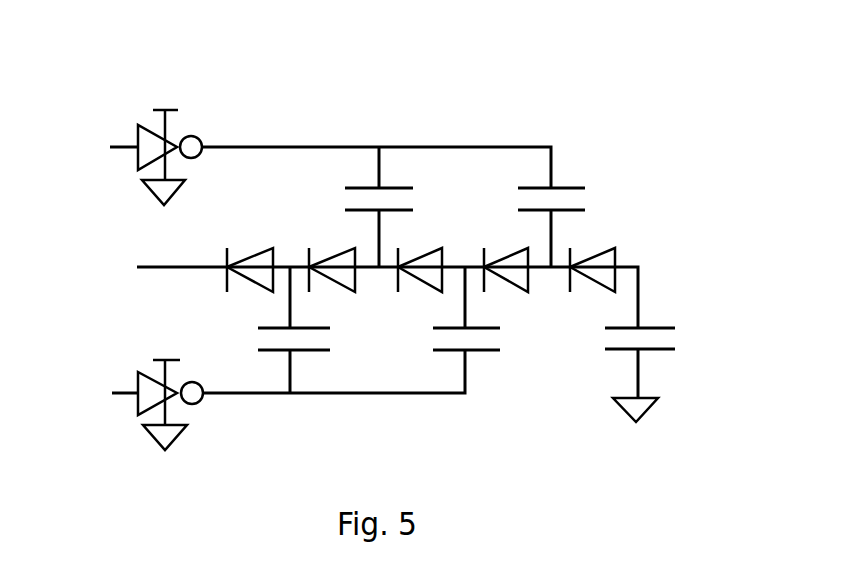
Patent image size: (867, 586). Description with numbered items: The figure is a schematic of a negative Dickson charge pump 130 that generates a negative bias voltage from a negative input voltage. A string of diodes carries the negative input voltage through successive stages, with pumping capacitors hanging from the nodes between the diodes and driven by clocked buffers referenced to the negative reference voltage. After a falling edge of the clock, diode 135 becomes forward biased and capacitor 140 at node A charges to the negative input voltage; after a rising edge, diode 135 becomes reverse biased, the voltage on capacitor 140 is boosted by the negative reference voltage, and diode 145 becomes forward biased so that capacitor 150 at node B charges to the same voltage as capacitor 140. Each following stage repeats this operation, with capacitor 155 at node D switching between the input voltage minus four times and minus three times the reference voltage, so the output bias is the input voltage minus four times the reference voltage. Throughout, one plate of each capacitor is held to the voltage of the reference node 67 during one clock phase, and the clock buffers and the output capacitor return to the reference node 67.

The negative Dickson charge pump 130 is at (355, 72).
The diode 135 is at (253, 243).
The diode 145 is at (330, 245).
The capacitor 140 is at (330, 337).
The capacitor 150 is at (418, 198).
The capacitor 155 is at (588, 197).
The reference node 67 is at (157, 195).